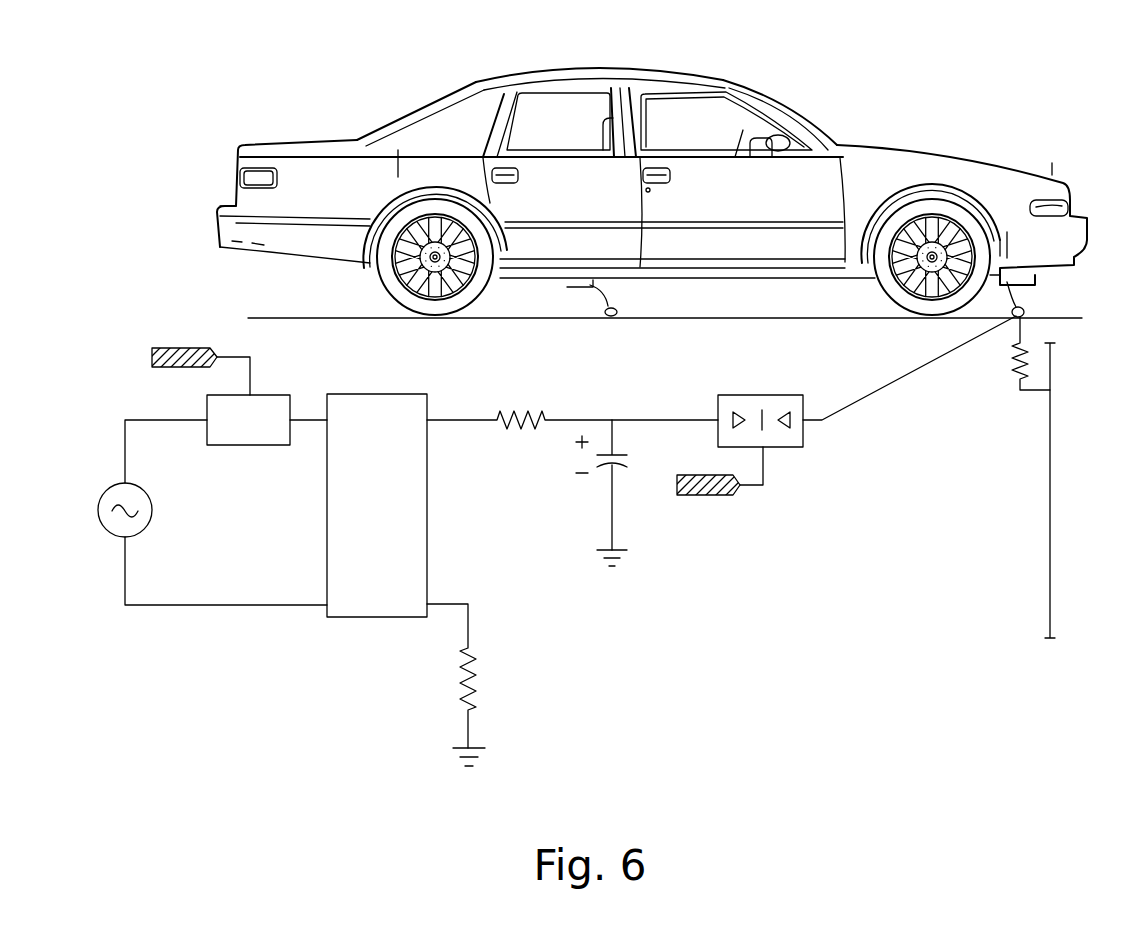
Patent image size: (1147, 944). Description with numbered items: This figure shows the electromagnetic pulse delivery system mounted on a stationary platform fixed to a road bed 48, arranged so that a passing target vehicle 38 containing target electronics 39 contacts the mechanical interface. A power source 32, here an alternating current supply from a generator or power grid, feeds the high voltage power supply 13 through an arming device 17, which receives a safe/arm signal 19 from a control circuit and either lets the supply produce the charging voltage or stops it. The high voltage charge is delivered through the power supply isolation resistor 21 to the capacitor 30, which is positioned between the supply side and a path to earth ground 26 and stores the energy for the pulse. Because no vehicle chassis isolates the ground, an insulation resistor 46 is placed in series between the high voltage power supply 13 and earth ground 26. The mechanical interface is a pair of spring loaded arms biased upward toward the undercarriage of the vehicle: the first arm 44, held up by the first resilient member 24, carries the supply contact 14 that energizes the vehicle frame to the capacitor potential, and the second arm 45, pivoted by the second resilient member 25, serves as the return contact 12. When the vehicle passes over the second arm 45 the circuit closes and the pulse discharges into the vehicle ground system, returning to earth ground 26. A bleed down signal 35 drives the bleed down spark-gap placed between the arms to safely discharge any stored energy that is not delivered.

The return contact 12 is at (995, 316).
The high voltage power supply 13 is at (345, 617).
The supply contact 14 is at (575, 288).
The arming device 17 is at (207, 430).
The safe/arm signal 19 is at (177, 348).
The power supply isolation resistor 21 is at (503, 427).
The first resilient member 24 is at (622, 318).
The second resilient member 25 is at (1028, 313).
The earth ground 26 is at (455, 748).
The capacitor 30 is at (623, 452).
The power source 32 is at (112, 538).
The bleed down signal 35 is at (683, 497).
The target vehicle 38 is at (393, 112).
The target electronics 39 is at (398, 150).
The first arm 44 is at (612, 289).
The second arm 45 is at (1013, 295).
The insulation resistor 46 is at (460, 660).
The road bed 48 is at (278, 318).